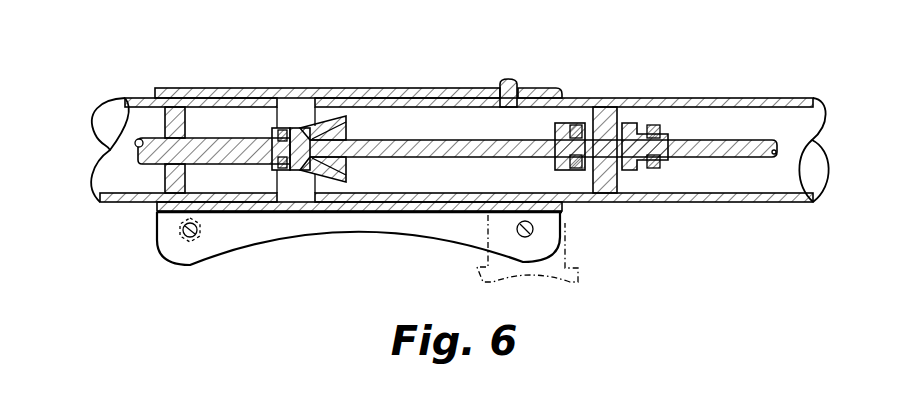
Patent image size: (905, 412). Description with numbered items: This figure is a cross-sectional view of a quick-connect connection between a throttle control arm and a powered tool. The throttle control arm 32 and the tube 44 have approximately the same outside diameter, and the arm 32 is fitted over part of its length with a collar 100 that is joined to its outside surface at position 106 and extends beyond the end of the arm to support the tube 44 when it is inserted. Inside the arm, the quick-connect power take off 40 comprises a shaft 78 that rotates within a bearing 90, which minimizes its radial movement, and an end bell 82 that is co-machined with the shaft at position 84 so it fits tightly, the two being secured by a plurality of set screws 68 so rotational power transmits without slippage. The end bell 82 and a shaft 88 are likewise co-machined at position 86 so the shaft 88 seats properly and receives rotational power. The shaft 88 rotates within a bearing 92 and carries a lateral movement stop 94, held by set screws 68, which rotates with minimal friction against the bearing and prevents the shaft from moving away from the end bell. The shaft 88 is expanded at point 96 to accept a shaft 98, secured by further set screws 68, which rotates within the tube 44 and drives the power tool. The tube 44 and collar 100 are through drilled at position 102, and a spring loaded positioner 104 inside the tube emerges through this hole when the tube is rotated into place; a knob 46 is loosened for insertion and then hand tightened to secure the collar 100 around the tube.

The throttle control arm 32 is at (103, 100).
The tube 44 is at (718, 97).
The quick-connect power take off 40 is at (215, 118).
The collar 100 is at (368, 88).
The hole 102 is at (502, 82).
The spring loaded positioner 104 is at (527, 88).
The shaft 78 is at (145, 136).
The bearing 90 is at (173, 115).
The co-machined position 84 is at (273, 130).
The end bell 82 is at (327, 122).
The co-machined position 86 is at (348, 182).
The shaft 88 is at (417, 139).
The shaft 98 is at (723, 158).
The lateral movement stop 94 is at (563, 175).
The bearing 92 is at (603, 107).
The expanded point 96 is at (632, 125).
The set screws 68 is at (282, 130).
The joining position 106 is at (157, 208).
The knob 46 is at (490, 282).